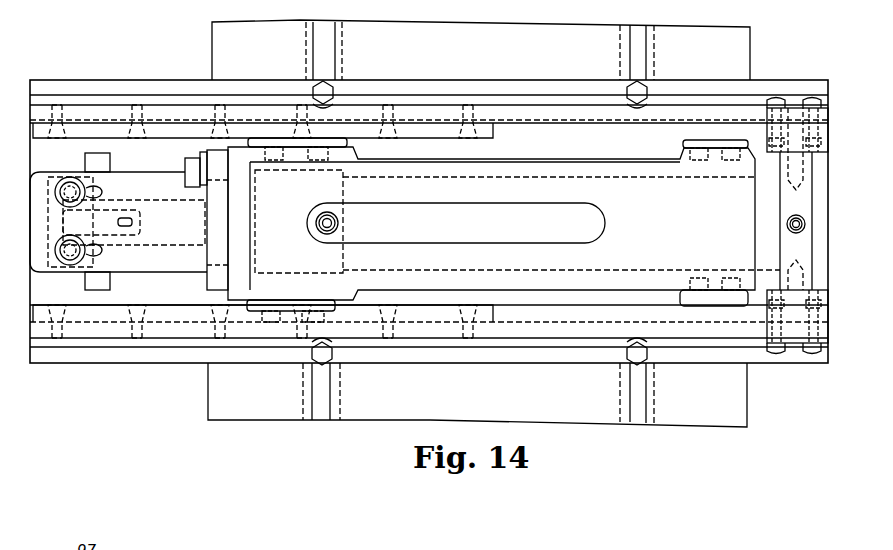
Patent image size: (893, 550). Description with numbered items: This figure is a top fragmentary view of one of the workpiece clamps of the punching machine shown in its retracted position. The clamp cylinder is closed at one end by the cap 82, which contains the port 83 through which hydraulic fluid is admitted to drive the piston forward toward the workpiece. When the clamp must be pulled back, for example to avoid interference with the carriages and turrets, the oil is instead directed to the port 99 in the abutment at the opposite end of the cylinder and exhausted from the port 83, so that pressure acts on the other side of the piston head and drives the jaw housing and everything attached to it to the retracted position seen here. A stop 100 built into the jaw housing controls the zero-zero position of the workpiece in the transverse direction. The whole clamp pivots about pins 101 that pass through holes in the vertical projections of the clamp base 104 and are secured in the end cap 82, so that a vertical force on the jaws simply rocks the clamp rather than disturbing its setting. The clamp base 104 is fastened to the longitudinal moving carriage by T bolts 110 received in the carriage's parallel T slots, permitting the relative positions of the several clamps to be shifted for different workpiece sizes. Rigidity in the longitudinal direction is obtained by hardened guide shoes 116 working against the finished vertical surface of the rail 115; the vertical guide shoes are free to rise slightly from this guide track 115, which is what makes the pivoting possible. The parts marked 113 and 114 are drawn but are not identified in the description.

The end plate 82 is at (802, 196).
The hole 83 is at (806, 226).
The pivot pin 99 is at (309, 227).
The bearing block feet 100 is at (97, 290).
The end bracket bolts 101 is at (793, 112).
The base frame 104 is at (173, 363).
The nut 110 is at (640, 355).
The support 113 is at (282, 391).
The nut 114 is at (320, 312).
The clamp bar 115 is at (72, 138).
The clamp plate 116 is at (328, 137).